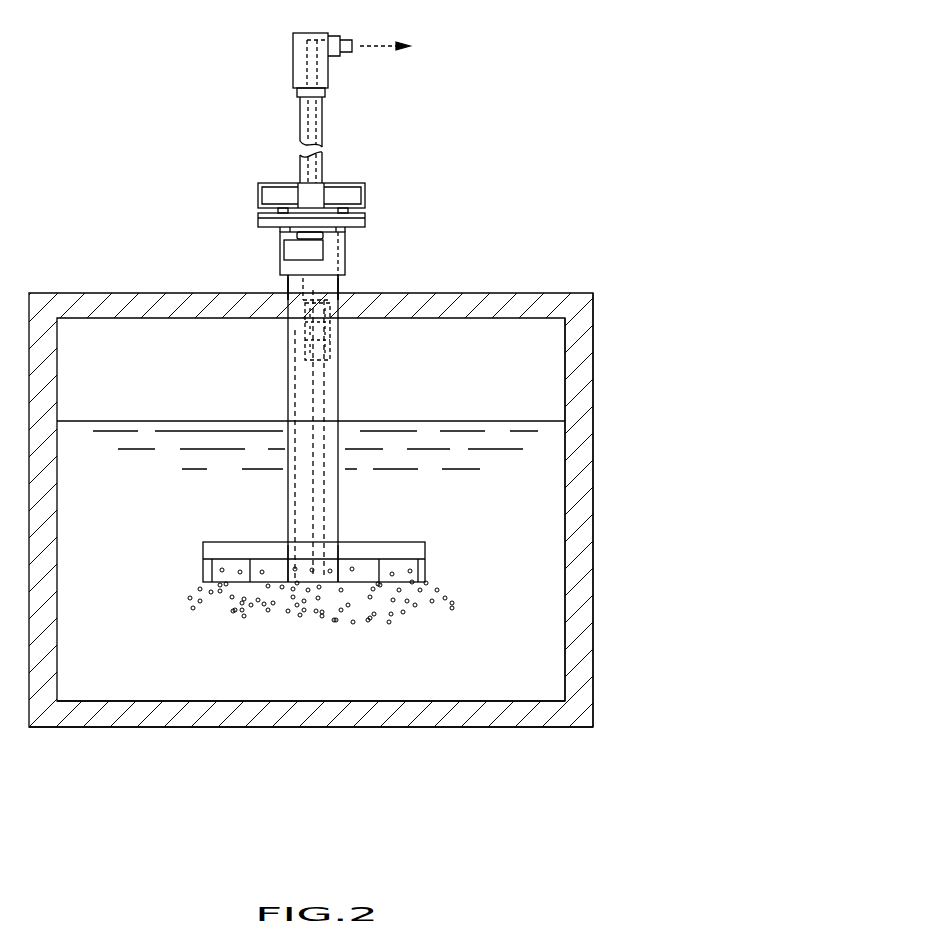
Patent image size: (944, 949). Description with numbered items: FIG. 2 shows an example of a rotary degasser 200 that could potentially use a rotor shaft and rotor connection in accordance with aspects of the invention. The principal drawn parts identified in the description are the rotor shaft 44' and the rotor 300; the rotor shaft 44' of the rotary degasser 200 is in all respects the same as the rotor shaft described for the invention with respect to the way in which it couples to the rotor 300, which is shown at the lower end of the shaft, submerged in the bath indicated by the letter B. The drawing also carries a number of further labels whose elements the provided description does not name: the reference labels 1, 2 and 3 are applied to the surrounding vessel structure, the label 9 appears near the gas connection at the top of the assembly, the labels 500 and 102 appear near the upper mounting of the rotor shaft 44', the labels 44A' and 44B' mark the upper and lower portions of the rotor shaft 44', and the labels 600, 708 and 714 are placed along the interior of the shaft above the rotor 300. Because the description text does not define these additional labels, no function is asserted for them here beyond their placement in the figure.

The tank 1 is at (510, 285).
The bottom wall of tank 2 is at (316, 712).
The side wall of tank 3 is at (578, 471).
The gas inlet connection to gas source 9 is at (349, 47).
The rotary degasser 200 is at (460, 168).
The mounting fitting 500 is at (362, 249).
The conduit coupling 102 is at (345, 284).
The rotor shaft 44' is at (377, 428).
The upper end of gas conduit 44A' is at (241, 271).
The lower end of gas conduit 44B' is at (254, 539).
The inner member 600 is at (312, 302).
The internal gas passages 708 is at (312, 377).
The flow restriction section 714 is at (340, 303).
The rotor 300 is at (432, 536).
The liquid bath B is at (133, 482).